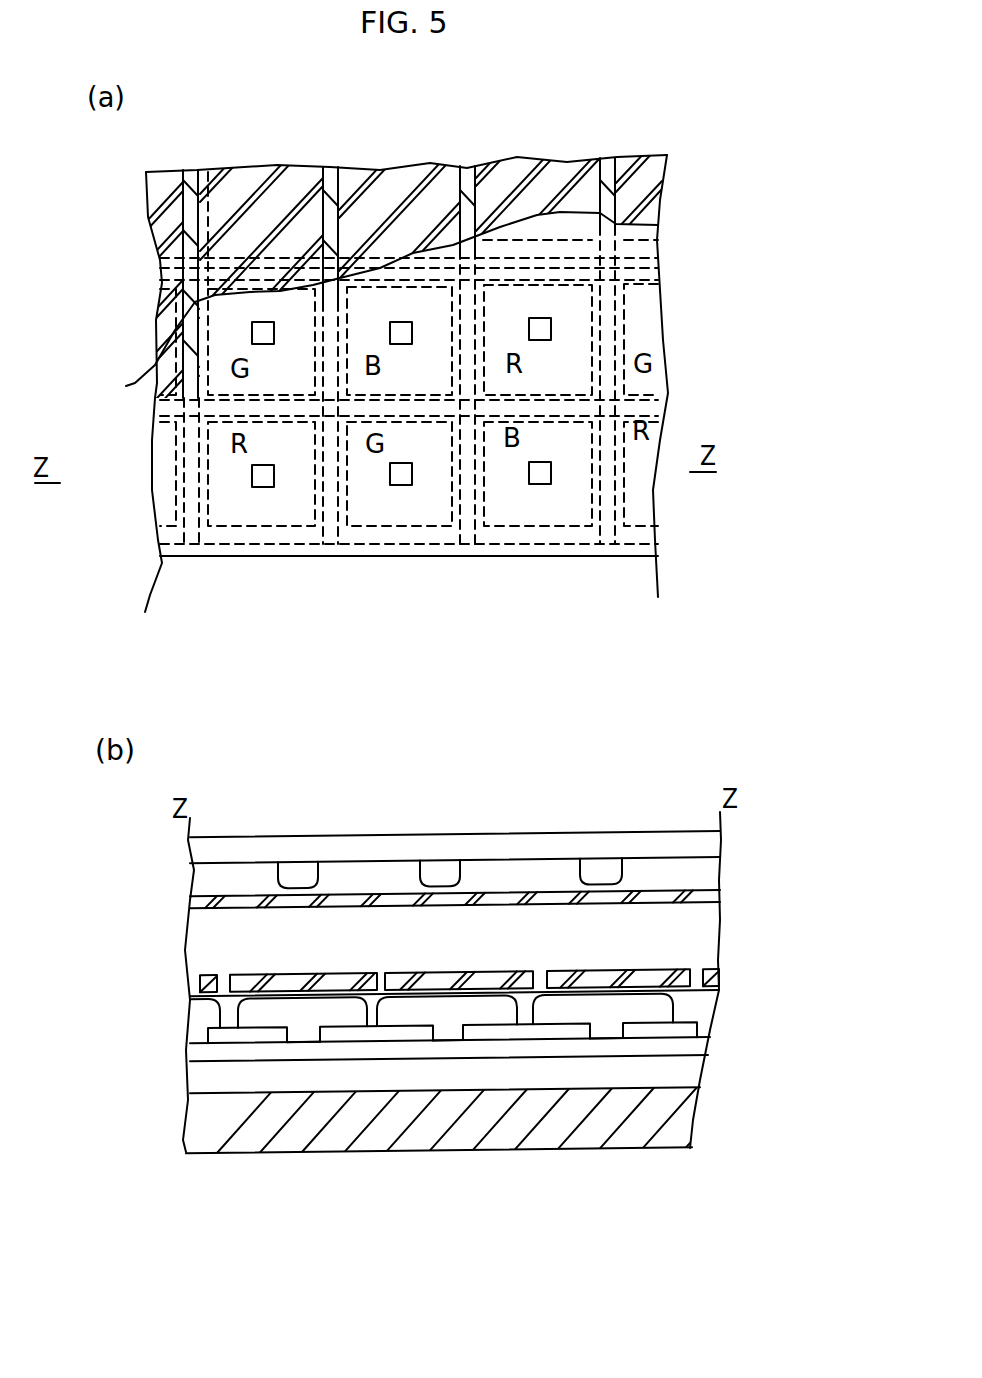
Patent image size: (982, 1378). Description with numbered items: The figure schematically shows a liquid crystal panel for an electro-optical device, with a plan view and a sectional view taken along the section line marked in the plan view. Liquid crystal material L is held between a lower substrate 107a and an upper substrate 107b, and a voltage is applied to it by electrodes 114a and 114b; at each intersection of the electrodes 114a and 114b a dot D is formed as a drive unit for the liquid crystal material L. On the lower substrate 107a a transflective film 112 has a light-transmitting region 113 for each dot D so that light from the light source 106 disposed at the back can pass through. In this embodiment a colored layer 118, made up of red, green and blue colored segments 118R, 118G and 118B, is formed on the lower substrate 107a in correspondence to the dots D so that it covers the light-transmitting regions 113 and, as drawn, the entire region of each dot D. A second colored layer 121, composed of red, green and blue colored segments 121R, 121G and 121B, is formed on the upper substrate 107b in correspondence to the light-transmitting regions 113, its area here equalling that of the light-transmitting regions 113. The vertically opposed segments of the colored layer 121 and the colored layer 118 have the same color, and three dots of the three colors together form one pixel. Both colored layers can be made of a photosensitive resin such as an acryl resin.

The light source 106 is at (677, 1113).
The substrate 107a is at (163, 463).
The substrate 107b is at (183, 270).
The transflective film 112 is at (233, 1038).
The light-transmitting region 113 is at (252, 478).
The electrode 114a is at (200, 984).
The electrode 114b is at (652, 182).
The colored layer 118 is at (558, 98).
The colored segment 118R is at (546, 303).
The colored segment 118G is at (263, 303).
The colored segment 118B is at (409, 305).
The colored layer 121 is at (653, 777).
The colored segment 121R is at (268, 486).
The colored segment 121G is at (407, 486).
The colored segment 121B is at (537, 486).
The dot D is at (214, 172).
The liquid crystal material L is at (668, 933).